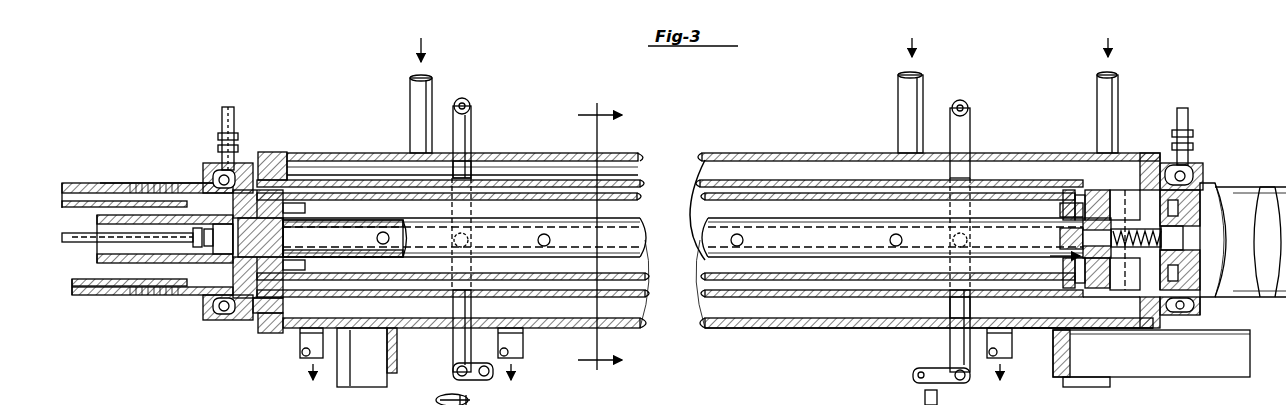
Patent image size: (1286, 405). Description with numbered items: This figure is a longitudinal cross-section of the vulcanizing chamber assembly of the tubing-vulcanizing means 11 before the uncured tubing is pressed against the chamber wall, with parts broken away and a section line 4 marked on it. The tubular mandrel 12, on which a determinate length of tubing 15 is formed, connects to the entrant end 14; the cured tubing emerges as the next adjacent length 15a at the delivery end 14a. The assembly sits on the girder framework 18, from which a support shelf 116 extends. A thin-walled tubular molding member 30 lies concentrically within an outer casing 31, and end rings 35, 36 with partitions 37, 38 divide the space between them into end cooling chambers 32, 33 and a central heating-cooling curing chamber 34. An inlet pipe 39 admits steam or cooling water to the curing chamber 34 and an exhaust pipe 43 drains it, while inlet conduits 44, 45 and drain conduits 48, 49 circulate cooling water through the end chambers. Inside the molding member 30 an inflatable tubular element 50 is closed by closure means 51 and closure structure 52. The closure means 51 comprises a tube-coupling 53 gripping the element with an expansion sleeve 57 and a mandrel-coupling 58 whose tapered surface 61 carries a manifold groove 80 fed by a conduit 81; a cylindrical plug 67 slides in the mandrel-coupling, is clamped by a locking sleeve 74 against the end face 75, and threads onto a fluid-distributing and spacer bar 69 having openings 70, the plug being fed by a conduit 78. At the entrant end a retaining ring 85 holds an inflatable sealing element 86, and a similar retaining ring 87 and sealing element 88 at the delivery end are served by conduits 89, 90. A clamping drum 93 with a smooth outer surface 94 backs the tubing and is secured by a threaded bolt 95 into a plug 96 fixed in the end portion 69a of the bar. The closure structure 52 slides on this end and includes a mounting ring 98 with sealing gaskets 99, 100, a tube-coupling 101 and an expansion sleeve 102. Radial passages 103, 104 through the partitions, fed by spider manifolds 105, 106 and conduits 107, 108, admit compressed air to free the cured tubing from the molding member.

The tubing or hose-vulcanizing means 11 is at (748, 332).
The tubular mandrel 12 is at (100, 295).
The entrant end 14 is at (250, 162).
The delivery end 14a is at (1168, 120).
The determinate length of tubing 15 is at (100, 185).
The next adjacent determinate length of cured tubing 15a is at (1225, 195).
The girder framework 18 is at (362, 380).
The tubular molding member 30 is at (640, 186).
The outer casing 31 is at (637, 160).
The end cooling chamber 32 is at (360, 170).
The end cooling chamber 33 is at (1080, 328).
The heating-cooling curing chamber 34 is at (565, 150).
The end ring 35 is at (287, 165).
The end ring 36 is at (1150, 330).
The partition 37 is at (455, 165).
The partition 38 is at (950, 310).
The inlet pipe 39 is at (900, 80).
The section line 4 is at (589, 237).
The exhaust or drain pipe 43 is at (515, 342).
The inlet conduit 44 is at (412, 85).
The inlet conduit 45 is at (1100, 82).
The drain conduit 48 is at (302, 350).
The drain conduit 49 is at (1010, 345).
The inflatable tubular element 50 is at (637, 200).
The closure means 51 is at (300, 207).
The closure structure 52 is at (1060, 238).
The tube-coupling 53 is at (270, 335).
The expansion sleeve 57 is at (300, 266).
The mandrel-coupling 58 is at (215, 180).
The tapered surface 61 is at (235, 312).
The cylindrical plug 67 is at (225, 270).
The fluid-distributing and spacer bar 69 is at (710, 246).
The end portion of the bar 69a is at (1140, 300).
The openings or passages 70 is at (544, 246).
The locking sleeve 74 is at (172, 264).
The end face 75 is at (222, 280).
The conduit 78 is at (72, 243).
The manifold groove 80 is at (255, 300).
The conduit 81 is at (92, 204).
The retaining ring 85 is at (205, 167).
The inflatable sealing element 86 is at (232, 318).
The retaining ring 87 is at (1195, 316).
The sealing element 88 is at (1180, 316).
The conduit 89 is at (228, 107).
The conduit 90 is at (1188, 112).
The clamping drum 93 is at (1195, 290).
The outer peripheral surface 94 is at (1205, 182).
The threaded bolt 95 is at (1130, 250).
The plug 96 is at (1160, 234).
The mounting ring 98 is at (1070, 205).
The sealing gasket 99 is at (1110, 165).
The sealing gasket 100 is at (1120, 175).
The tube-coupling 101 is at (1085, 195).
The expansion sleeve 102 is at (1078, 200).
The passages 103 is at (470, 152).
The passages 104 is at (955, 250).
The spider manifold 105 is at (468, 104).
The spider manifold 106 is at (965, 102).
The conduit 107 is at (478, 380).
The conduit 108 is at (913, 375).
The support shelf 116 is at (1190, 370).